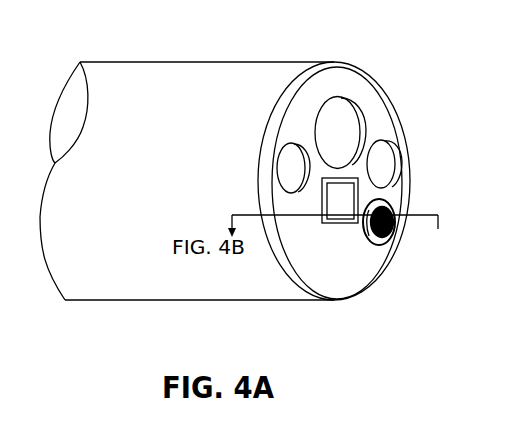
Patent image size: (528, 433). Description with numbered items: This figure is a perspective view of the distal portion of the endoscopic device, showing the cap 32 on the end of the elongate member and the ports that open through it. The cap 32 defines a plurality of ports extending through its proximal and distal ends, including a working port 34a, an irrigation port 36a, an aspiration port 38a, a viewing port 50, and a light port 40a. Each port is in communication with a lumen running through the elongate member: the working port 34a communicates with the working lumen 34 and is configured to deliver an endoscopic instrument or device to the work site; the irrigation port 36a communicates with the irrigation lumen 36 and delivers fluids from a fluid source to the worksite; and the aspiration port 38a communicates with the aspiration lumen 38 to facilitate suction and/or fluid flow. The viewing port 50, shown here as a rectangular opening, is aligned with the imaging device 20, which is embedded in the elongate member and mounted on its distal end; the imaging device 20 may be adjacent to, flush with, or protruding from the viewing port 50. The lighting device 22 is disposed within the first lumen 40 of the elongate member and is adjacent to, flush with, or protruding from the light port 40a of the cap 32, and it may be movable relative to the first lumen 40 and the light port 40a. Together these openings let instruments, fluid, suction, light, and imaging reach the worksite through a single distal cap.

The imaging device 20 is at (350, 223).
The lighting device 22 is at (379, 238).
The cap 32 is at (350, 64).
The working lumen 34 is at (328, 118).
The working port 34a is at (364, 118).
The irrigation lumen 36 is at (382, 146).
The irrigation port 36a is at (397, 163).
The aspiration lumen 38 is at (290, 178).
The aspiration port 38a is at (291, 142).
The first lumen 40 is at (380, 202).
The light port 40a is at (441, 233).
The viewing port 50 is at (325, 225).